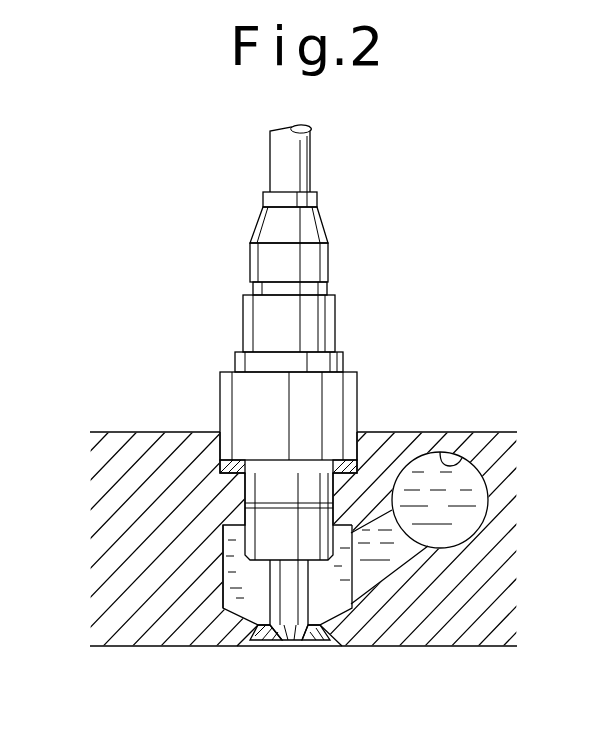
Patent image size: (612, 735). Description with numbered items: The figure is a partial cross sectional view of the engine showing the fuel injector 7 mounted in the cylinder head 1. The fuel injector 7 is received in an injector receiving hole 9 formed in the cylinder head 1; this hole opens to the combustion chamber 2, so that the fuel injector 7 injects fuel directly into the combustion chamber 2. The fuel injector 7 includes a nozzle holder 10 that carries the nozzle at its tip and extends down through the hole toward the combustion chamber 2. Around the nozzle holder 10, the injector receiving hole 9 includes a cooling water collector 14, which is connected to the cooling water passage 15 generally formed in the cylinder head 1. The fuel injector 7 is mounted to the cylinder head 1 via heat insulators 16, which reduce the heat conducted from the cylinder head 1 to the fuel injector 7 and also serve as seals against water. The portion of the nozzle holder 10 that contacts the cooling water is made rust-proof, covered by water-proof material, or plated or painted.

The cylinder head 1 is at (403, 445).
The combustion chamber 2 is at (462, 691).
The fuel injector 7 is at (316, 330).
The injector receiving hole 9 is at (256, 493).
The nozzle holder 10 is at (250, 622).
The cooling water collector 14 is at (230, 590).
The cooling water passage 15 is at (478, 460).
The heat insulators 16 is at (362, 462).